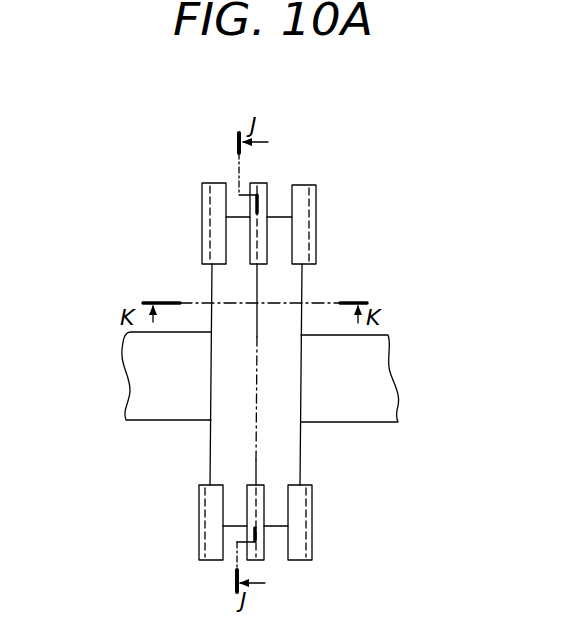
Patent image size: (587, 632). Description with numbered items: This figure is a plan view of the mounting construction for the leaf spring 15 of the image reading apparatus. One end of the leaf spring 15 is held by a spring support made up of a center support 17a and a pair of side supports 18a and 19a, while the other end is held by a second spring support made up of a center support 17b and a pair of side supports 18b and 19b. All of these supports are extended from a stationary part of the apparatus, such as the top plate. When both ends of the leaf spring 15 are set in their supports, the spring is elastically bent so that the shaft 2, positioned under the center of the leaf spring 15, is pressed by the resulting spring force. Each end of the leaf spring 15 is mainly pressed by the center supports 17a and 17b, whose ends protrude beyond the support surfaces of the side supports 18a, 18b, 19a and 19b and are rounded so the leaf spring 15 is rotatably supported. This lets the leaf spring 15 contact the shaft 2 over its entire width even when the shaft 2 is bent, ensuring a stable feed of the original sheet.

The shaft 2 is at (375, 340).
The leaf spring 15 is at (290, 292).
The center support 17a is at (258, 183).
The center support 17b is at (255, 562).
The side support 18a is at (217, 183).
The side support 18b is at (213, 562).
The side support 19a is at (307, 185).
The side support 19b is at (298, 562).